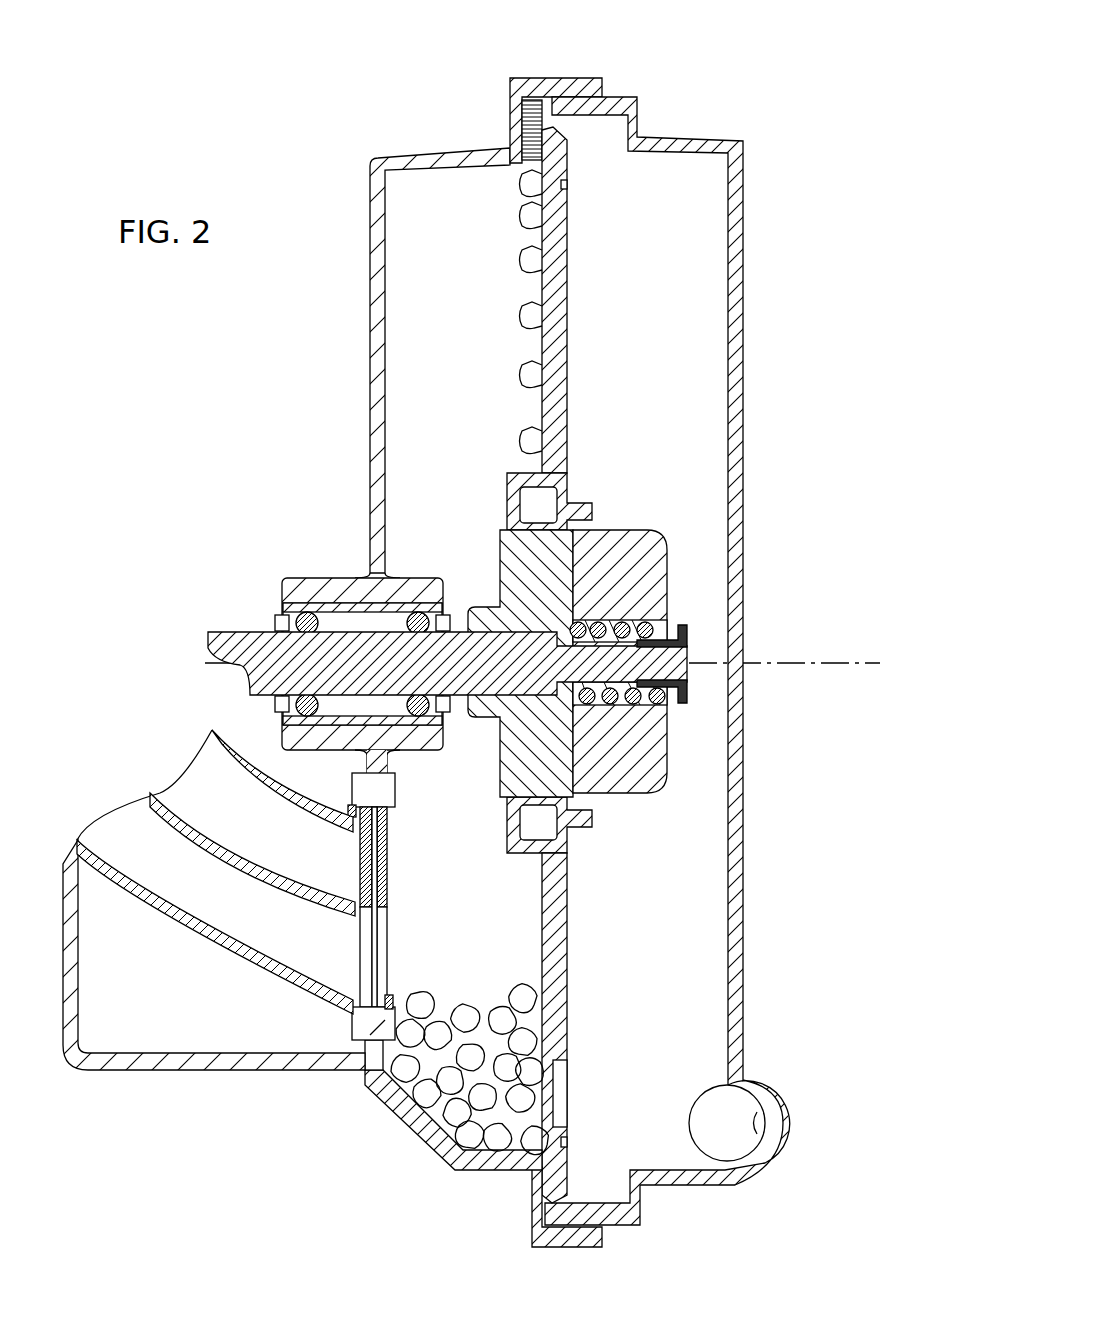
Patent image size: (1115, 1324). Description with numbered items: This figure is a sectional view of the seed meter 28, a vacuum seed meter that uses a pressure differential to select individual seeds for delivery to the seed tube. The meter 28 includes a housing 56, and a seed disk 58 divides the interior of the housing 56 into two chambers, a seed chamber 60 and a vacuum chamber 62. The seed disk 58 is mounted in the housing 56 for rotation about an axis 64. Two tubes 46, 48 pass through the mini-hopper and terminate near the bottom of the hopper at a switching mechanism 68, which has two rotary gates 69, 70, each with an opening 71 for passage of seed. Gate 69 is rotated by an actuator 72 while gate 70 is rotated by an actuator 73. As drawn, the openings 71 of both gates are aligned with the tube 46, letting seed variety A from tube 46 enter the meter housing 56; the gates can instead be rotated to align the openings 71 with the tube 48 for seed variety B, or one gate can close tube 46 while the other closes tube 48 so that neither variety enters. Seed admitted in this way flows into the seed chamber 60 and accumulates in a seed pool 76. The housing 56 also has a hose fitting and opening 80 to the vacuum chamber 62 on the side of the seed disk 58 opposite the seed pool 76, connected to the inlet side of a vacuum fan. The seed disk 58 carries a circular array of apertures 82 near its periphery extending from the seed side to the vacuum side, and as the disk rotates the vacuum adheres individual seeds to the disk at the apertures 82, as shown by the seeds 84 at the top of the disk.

The seed meter 28 is at (708, 83).
The tube 46 is at (127, 853).
The tube 48 is at (210, 797).
The housing 56 is at (750, 202).
The seed disk 58 is at (567, 978).
The seed chamber 60 is at (440, 390).
The vacuum chamber 62 is at (690, 370).
The axis 64 is at (542, 638).
The switching mechanism 68 is at (406, 879).
The rotary gate 69 is at (368, 875).
The rotary gate 70 is at (390, 878).
The opening 71 is at (365, 970).
The actuator 72 is at (386, 793).
The actuator 73 is at (366, 1040).
The seed pool 76 is at (487, 1000).
The hose fitting and opening 80 is at (775, 1140).
The apertures 82 is at (569, 184).
The seeds 84 is at (518, 184).